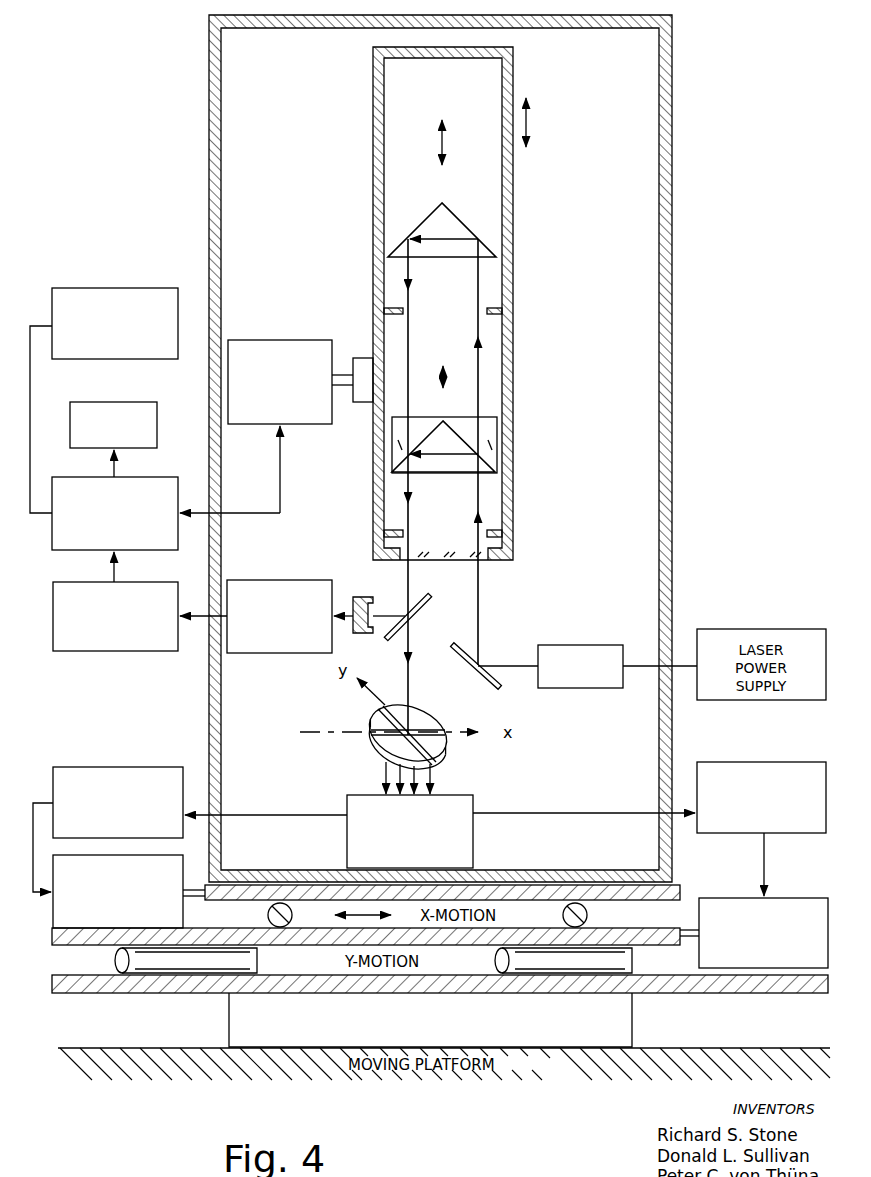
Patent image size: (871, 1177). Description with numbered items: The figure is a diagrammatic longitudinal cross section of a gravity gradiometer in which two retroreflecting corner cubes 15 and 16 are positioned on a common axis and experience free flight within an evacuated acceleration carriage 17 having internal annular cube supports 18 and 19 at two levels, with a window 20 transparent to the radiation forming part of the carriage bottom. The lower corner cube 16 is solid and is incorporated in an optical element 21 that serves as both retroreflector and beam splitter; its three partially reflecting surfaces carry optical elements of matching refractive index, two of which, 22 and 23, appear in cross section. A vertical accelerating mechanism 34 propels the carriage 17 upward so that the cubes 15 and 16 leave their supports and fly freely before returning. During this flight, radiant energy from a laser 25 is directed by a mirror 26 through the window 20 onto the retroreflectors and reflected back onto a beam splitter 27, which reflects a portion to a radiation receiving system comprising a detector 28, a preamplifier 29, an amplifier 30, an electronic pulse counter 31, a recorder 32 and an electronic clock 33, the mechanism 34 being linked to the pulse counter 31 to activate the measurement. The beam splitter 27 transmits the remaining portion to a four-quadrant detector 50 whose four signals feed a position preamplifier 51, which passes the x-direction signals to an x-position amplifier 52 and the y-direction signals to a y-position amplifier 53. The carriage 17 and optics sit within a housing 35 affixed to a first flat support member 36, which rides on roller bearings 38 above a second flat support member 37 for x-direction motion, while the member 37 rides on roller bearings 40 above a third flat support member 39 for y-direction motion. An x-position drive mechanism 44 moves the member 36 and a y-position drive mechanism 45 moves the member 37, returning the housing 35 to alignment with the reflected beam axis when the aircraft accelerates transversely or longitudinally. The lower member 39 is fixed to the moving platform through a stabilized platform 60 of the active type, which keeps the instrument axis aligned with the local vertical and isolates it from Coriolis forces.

The retroreflecting corner cube 15 is at (484, 248).
The corner cube 16 is at (488, 468).
The evacuated acceleration carriage 17 is at (513, 345).
The internal annular cube support 18 is at (513, 292).
The internal annular cube support 19 is at (508, 533).
The window 20 is at (485, 561).
The optical element 21 is at (490, 417).
The optical element 22 is at (488, 445).
The optical element 23 is at (404, 440).
The laser 25 is at (568, 648).
The mirror 26 is at (487, 680).
The beam splitter 27 is at (420, 615).
The detector 28 is at (365, 600).
The preamplifier 29 is at (290, 645).
The amplifier 30 is at (97, 637).
The electronic pulse counter 31 is at (143, 493).
The recorder 32 is at (105, 302).
The electronic clock 33 is at (103, 415).
The vertical accelerating mechanism 34 is at (240, 340).
The housing 35 is at (670, 256).
The first flat support member 36 is at (672, 893).
The second flat support member 37 is at (650, 935).
The roller bearings 38 is at (588, 914).
The third flat support member 39 is at (715, 980).
The roller bearings 40 is at (545, 975).
The x-position drive mechanism 44 is at (68, 898).
The y-position drive mechanism 45 is at (790, 900).
The four-quadrant detector 50 is at (440, 748).
The position preamplifier 51 is at (475, 826).
The x-position amplifier 52 is at (80, 775).
The y-position amplifier 53 is at (742, 768).
The stabilized platform 60 is at (271, 1035).